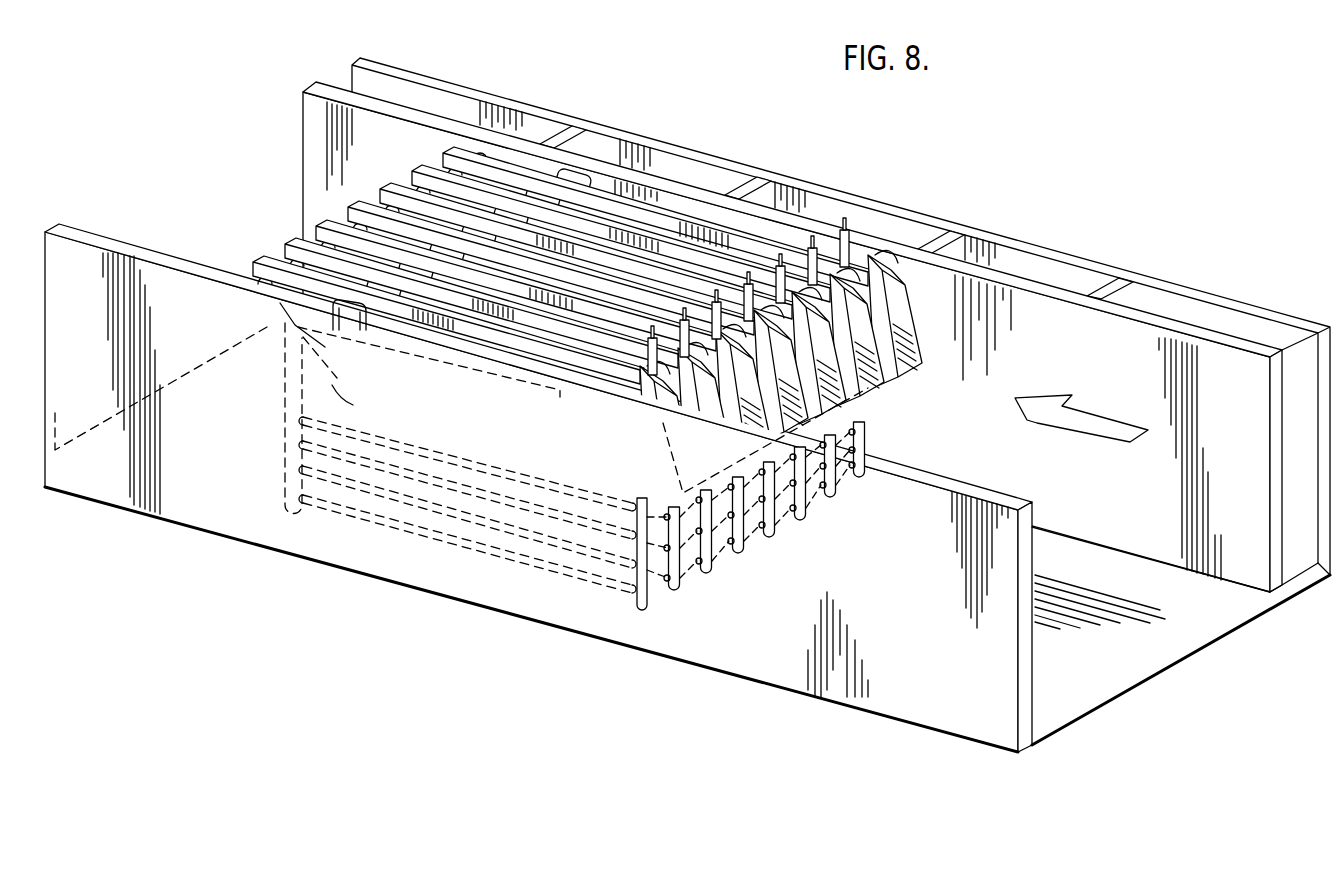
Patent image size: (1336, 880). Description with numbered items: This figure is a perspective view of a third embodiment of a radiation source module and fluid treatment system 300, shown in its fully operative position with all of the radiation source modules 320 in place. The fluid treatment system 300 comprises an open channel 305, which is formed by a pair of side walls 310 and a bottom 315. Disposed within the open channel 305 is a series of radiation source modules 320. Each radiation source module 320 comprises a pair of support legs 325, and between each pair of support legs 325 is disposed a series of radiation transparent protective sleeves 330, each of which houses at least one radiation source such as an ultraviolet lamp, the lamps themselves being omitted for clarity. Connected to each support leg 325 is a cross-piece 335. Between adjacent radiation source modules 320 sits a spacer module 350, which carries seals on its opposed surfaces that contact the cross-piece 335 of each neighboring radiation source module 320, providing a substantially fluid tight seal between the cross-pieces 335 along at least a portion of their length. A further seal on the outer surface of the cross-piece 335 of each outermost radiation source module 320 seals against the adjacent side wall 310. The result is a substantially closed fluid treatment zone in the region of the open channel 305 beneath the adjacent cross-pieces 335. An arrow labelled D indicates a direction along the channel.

The fluid treatment system 300 is at (890, 188).
The open channel 305 is at (1128, 342).
The side walls 310 is at (1027, 675).
The bottom 315 is at (1153, 640).
The radiation source modules 320 is at (782, 545).
The support legs 325 is at (291, 498).
The radiation transparent protective sleeves 330 is at (380, 532).
The cross-piece 335 is at (446, 416).
The spacer module 350 is at (443, 152).
The direction of movement D is at (1112, 438).